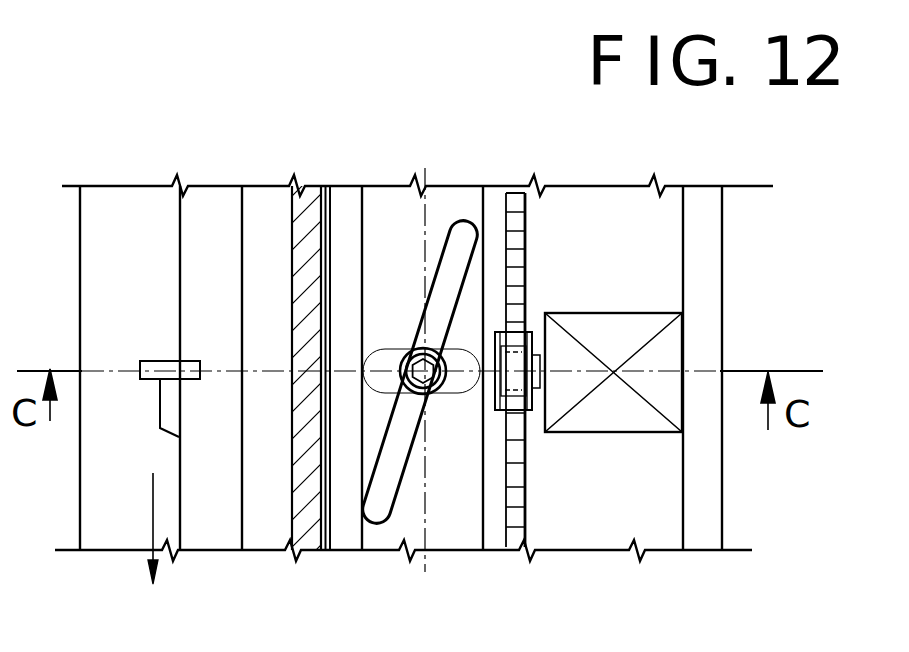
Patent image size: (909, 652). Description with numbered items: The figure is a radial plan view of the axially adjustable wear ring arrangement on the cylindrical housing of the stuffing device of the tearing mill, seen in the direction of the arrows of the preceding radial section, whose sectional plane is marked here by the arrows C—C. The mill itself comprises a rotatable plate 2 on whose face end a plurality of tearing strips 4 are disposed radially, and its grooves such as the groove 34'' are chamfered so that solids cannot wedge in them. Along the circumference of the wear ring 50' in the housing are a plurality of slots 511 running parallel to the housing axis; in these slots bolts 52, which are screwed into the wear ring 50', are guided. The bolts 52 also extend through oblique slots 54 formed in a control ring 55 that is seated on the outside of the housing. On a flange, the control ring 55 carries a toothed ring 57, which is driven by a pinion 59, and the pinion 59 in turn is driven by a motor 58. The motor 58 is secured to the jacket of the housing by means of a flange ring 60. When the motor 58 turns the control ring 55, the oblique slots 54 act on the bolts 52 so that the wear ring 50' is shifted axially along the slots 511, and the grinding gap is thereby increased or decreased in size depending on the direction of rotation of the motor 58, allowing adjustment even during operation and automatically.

The plate 2 is at (137, 205).
The tearing strips 4 is at (184, 361).
The groove 34'' is at (108, 534).
The wear ring 50' is at (265, 323).
The control ring 55 is at (383, 205).
The slots 511 is at (462, 393).
The oblique slots 54 is at (433, 213).
The bolts 52 is at (400, 352).
The toothed ring 57 is at (520, 205).
The pinion 59 is at (513, 408).
The motor 58 is at (600, 327).
The flange ring 60 is at (645, 215).